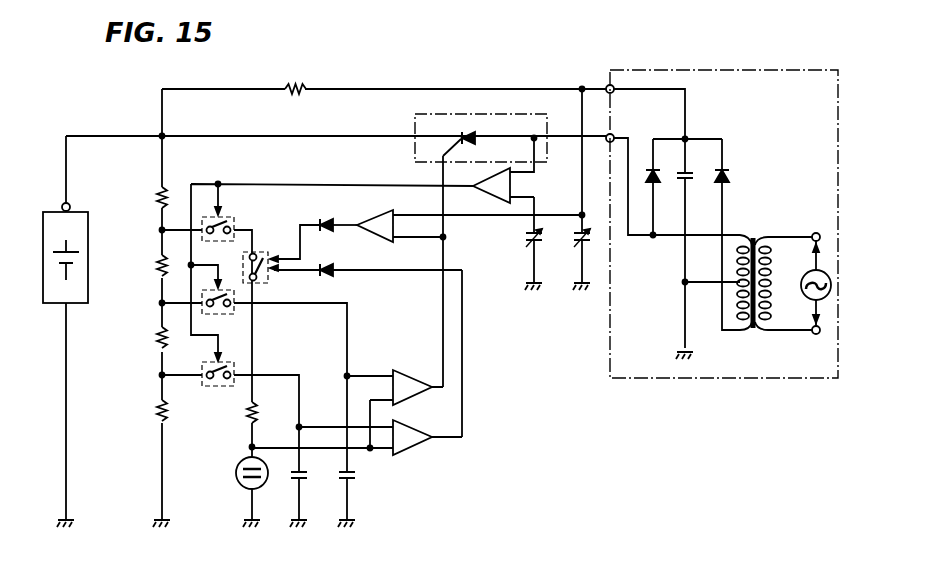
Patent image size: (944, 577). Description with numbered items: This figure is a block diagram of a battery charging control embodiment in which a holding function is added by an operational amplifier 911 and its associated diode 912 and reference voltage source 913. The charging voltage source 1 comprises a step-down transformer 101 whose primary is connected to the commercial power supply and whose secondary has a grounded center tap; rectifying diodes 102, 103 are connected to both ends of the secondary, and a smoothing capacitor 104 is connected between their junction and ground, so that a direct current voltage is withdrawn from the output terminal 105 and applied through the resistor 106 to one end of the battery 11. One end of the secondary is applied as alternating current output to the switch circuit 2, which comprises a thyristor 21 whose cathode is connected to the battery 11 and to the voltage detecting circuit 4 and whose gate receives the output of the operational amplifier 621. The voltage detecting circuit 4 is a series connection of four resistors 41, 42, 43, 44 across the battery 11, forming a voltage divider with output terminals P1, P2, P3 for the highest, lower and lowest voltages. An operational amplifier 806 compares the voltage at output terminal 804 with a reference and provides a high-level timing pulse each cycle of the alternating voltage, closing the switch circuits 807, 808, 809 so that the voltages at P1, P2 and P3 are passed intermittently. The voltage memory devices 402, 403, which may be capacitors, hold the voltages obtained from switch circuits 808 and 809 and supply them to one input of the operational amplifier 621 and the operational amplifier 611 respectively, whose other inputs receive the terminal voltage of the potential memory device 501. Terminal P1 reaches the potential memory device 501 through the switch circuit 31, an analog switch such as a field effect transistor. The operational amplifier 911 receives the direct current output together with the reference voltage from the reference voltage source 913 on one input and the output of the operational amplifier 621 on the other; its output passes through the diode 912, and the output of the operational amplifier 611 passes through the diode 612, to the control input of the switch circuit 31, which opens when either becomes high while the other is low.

The charging voltage source 1 is at (724, 257).
The switch circuit 2 is at (415, 120).
The voltage detecting circuit 4 is at (148, 176).
The battery 11 is at (72, 302).
The thyristor 21 is at (482, 135).
The switch circuit 31 is at (268, 282).
The resistor 41 is at (156, 200).
The resistor 42 is at (156, 270).
The resistor 43 is at (156, 345).
The resistor 44 is at (156, 422).
The output terminal P1 is at (160, 231).
The output terminal P2 is at (160, 303).
The output terminal P3 is at (160, 377).
The step-down transformer 101 is at (752, 332).
The rectifying diode 102 is at (728, 182).
The rectifying diode 103 is at (656, 182).
The smoothing capacitor 104 is at (690, 182).
The output terminal 105 is at (614, 92).
The resistor 106 is at (304, 88).
The voltage memory device 402 is at (352, 476).
The voltage memory device 403 is at (304, 476).
The potential memory device 501 is at (238, 480).
The operational amplifier 611 is at (406, 448).
The diode 612 is at (330, 272).
The operational amplifier 621 is at (406, 382).
The output terminal 804 is at (531, 246).
The operational amplifier 806 is at (498, 196).
The switch circuit 807 is at (232, 222).
The switch circuit 808 is at (214, 312).
The switch circuit 809 is at (210, 385).
The operational amplifier 911 is at (372, 236).
The diode 912 is at (326, 230).
The reference voltage source 913 is at (578, 250).